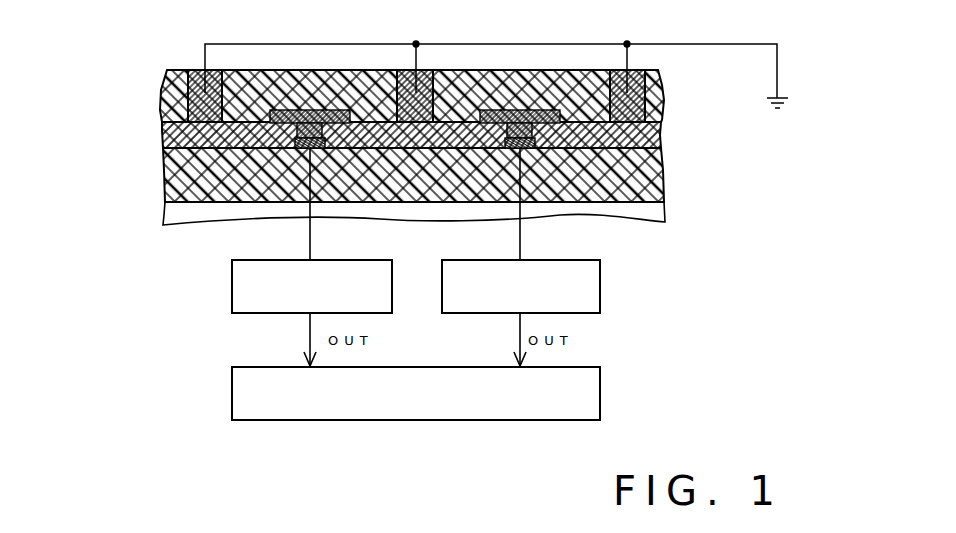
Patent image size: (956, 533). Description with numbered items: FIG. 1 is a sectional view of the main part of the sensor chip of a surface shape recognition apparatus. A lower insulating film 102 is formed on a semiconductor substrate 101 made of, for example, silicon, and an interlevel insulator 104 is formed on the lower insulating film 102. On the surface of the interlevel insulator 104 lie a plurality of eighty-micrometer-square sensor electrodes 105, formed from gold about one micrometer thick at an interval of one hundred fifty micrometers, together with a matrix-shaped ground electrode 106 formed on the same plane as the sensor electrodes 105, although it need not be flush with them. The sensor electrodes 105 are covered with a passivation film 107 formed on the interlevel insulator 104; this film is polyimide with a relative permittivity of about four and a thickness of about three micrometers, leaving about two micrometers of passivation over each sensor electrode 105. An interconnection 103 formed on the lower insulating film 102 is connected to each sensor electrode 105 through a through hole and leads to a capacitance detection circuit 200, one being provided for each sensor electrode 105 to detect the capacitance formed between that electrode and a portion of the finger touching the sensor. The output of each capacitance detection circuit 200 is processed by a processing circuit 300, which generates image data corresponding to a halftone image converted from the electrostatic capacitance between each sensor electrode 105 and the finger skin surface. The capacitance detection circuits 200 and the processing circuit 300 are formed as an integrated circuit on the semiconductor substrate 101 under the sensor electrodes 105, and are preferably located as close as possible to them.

The semiconductor substrate 101 is at (656, 223).
The lower insulating film 102 is at (660, 185).
The interconnection 103 is at (298, 147).
The interlevel insulator 104 is at (660, 143).
The sensor electrode 105 is at (308, 110).
The ground electrode 106 is at (187, 108).
The passivation film 107 is at (271, 70).
The capacitance detection circuit 200 is at (232, 285).
The processing circuit 300 is at (600, 382).